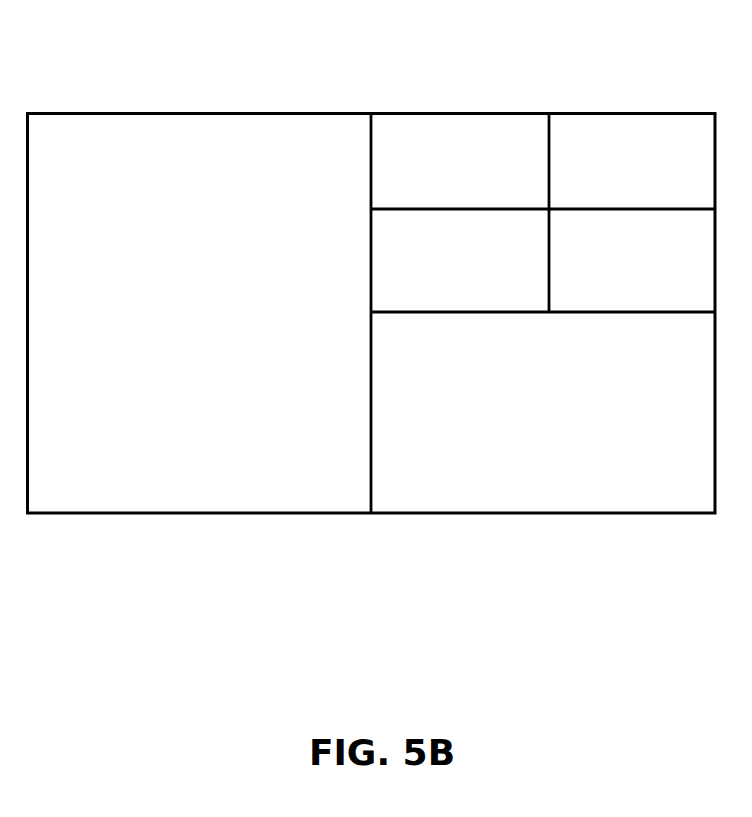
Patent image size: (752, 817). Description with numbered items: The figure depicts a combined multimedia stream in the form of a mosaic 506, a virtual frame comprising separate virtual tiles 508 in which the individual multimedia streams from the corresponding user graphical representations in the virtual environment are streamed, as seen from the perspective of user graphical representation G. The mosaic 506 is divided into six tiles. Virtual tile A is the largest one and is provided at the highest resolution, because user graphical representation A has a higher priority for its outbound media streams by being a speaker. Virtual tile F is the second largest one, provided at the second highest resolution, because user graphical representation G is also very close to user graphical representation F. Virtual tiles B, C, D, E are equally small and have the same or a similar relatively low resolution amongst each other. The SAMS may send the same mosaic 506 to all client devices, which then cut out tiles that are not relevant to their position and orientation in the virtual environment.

The virtual tiles 508 is at (204, 125).
The mosaic 506 is at (385, 95).
The virtual tile A is at (199, 313).
The virtual tile B is at (460, 161).
The virtual tile C is at (632, 161).
The virtual tile D is at (460, 260).
The virtual tile E is at (632, 260).
The virtual tile F is at (543, 412).